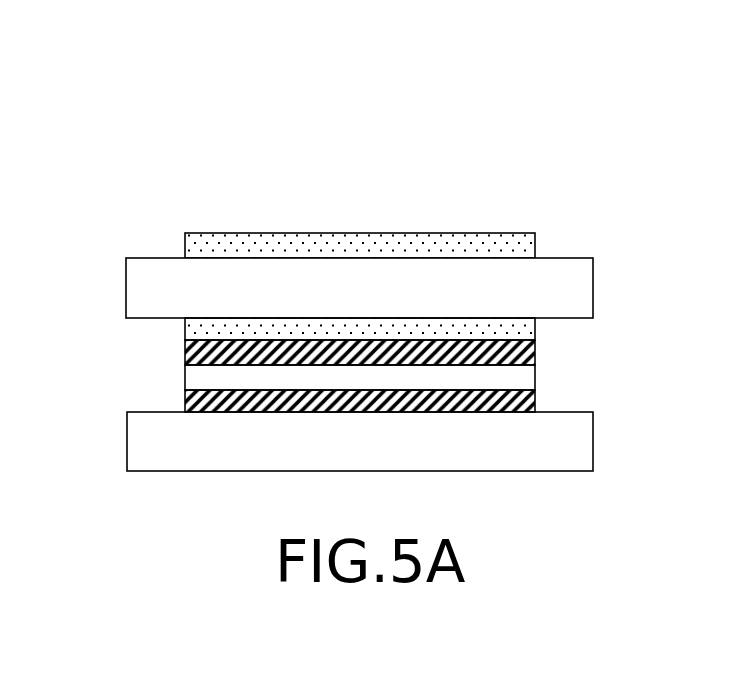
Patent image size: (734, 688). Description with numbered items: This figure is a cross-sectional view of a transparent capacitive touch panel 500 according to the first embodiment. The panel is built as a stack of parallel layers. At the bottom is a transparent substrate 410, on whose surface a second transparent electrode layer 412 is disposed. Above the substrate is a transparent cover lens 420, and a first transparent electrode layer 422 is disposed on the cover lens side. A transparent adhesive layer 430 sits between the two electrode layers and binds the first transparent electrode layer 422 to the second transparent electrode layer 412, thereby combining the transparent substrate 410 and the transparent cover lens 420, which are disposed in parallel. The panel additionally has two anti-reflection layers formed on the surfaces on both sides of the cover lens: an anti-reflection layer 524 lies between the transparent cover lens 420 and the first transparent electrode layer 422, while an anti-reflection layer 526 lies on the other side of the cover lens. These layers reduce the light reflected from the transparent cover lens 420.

The transparent capacitive touch panel 500 is at (610, 605).
The transparent substrate 410 is at (570, 452).
The second transparent electrode layer 412 is at (525, 393).
The transparent adhesive layer 430 is at (200, 373).
The first transparent electrode layer 422 is at (530, 355).
The anti-reflection layer 524 is at (523, 327).
The transparent cover lens 420 is at (568, 276).
The anti-reflection layer 526 is at (523, 242).